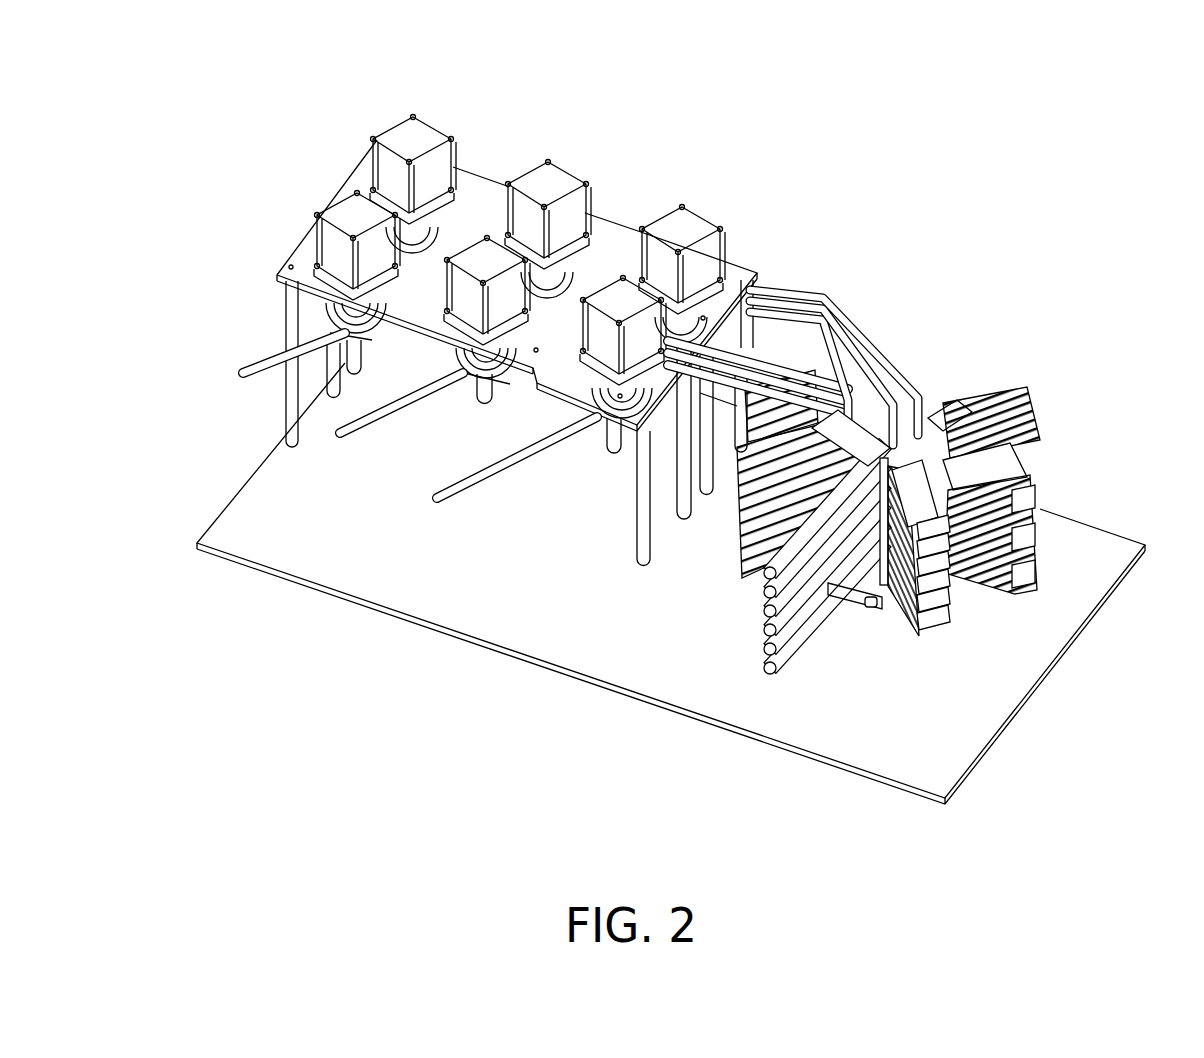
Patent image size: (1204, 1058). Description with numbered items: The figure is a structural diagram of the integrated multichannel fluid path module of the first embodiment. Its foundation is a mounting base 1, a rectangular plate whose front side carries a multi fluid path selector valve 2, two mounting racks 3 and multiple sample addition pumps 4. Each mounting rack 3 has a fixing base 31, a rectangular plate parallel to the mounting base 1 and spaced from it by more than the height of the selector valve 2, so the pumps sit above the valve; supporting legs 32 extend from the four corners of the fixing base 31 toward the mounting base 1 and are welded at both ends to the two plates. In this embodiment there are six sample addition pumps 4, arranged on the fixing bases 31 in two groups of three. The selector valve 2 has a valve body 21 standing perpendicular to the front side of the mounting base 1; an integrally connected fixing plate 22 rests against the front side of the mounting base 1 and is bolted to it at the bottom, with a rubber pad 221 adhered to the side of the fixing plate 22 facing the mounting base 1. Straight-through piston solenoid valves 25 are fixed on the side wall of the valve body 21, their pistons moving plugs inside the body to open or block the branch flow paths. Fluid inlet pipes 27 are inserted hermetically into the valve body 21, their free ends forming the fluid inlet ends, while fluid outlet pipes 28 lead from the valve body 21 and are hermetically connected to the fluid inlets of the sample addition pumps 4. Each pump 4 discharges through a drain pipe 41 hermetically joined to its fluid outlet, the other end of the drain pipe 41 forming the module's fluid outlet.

The mounting base 1 is at (520, 625).
The multi fluid path selector valve 2 is at (878, 538).
The mounting rack 3 is at (480, 353).
The fixing base 31 is at (285, 248).
The supporting leg 32 is at (290, 305).
The sample addition pump 4 is at (418, 140).
The drain pipe 41 is at (270, 352).
The valve body 21 is at (950, 420).
The fixing plate 22 is at (915, 596).
The rubber pad 221 is at (878, 607).
The straight-through piston solenoid valve 25 is at (1040, 448).
The fluid inlet pipe 27 is at (770, 672).
The fluid outlet pipe 28 is at (838, 306).